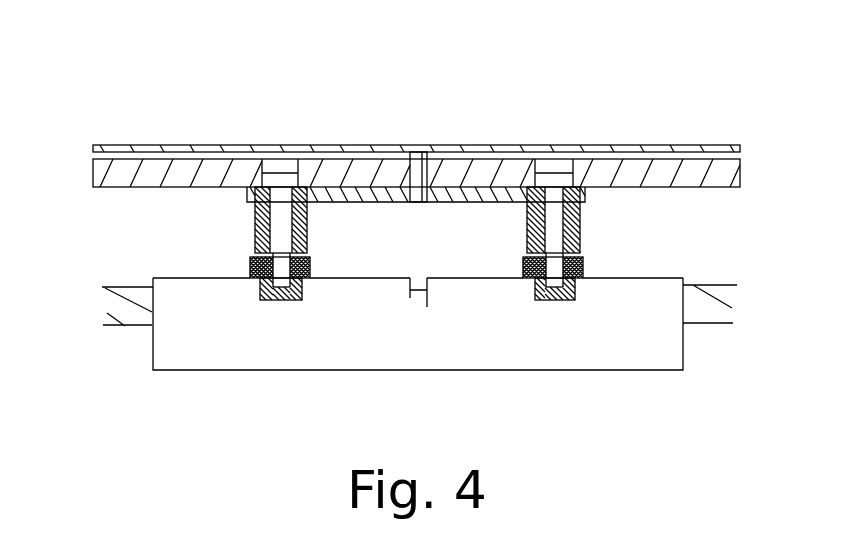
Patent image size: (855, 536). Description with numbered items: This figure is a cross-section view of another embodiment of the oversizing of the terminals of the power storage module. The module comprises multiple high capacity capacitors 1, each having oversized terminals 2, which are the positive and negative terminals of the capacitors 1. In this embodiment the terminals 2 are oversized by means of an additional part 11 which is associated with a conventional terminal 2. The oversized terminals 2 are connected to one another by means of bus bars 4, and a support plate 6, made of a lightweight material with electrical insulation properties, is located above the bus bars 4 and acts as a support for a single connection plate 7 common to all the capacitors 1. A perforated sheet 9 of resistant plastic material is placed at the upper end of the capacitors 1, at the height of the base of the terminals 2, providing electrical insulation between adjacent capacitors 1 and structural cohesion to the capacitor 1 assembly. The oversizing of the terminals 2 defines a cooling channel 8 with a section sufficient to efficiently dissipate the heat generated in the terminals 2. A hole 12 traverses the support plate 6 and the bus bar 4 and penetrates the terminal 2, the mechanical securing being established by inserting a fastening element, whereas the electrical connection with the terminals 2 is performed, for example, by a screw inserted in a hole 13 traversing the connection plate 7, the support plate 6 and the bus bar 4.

The high capacity capacitor 1 is at (280, 338).
The oversized terminal 2 is at (253, 267).
The bus bar 4 is at (587, 192).
The support plate 6 is at (153, 168).
The connection plate 7 is at (650, 145).
The cooling channel 8 is at (650, 237).
The perforated sheet 9 is at (707, 312).
The additional part 11 is at (257, 222).
The hole 12 is at (277, 165).
The hole 13 is at (421, 141).